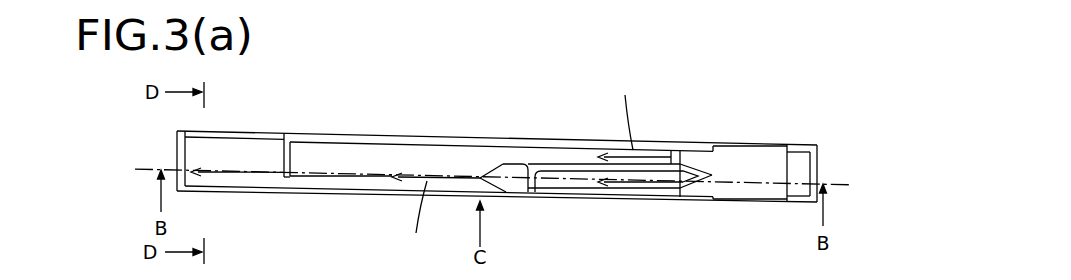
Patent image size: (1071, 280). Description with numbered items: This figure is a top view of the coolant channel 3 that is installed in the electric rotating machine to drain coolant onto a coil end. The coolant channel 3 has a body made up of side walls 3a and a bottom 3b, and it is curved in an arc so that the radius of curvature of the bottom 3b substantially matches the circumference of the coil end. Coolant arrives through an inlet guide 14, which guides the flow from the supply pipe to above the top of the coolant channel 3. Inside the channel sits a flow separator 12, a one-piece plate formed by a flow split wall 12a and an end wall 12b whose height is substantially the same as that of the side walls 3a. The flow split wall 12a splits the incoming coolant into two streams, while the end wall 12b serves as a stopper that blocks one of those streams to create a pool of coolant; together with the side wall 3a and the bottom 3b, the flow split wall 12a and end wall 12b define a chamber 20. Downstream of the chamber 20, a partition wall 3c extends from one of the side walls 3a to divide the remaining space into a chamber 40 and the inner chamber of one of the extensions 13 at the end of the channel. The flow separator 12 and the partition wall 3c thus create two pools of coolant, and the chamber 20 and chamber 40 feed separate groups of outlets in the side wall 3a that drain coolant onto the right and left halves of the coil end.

The coolant channel 3 is at (497, 137).
The side walls 3a is at (360, 182).
The bottom 3b is at (395, 153).
The partition wall 3c is at (292, 178).
The chamber 40 is at (330, 163).
The flow separator 12 is at (593, 104).
The flow split wall 12a is at (568, 165).
The end wall 12b is at (525, 178).
The extensions 13 is at (282, 203).
The inlet guide 14 is at (703, 146).
The chamber 20 is at (528, 205).